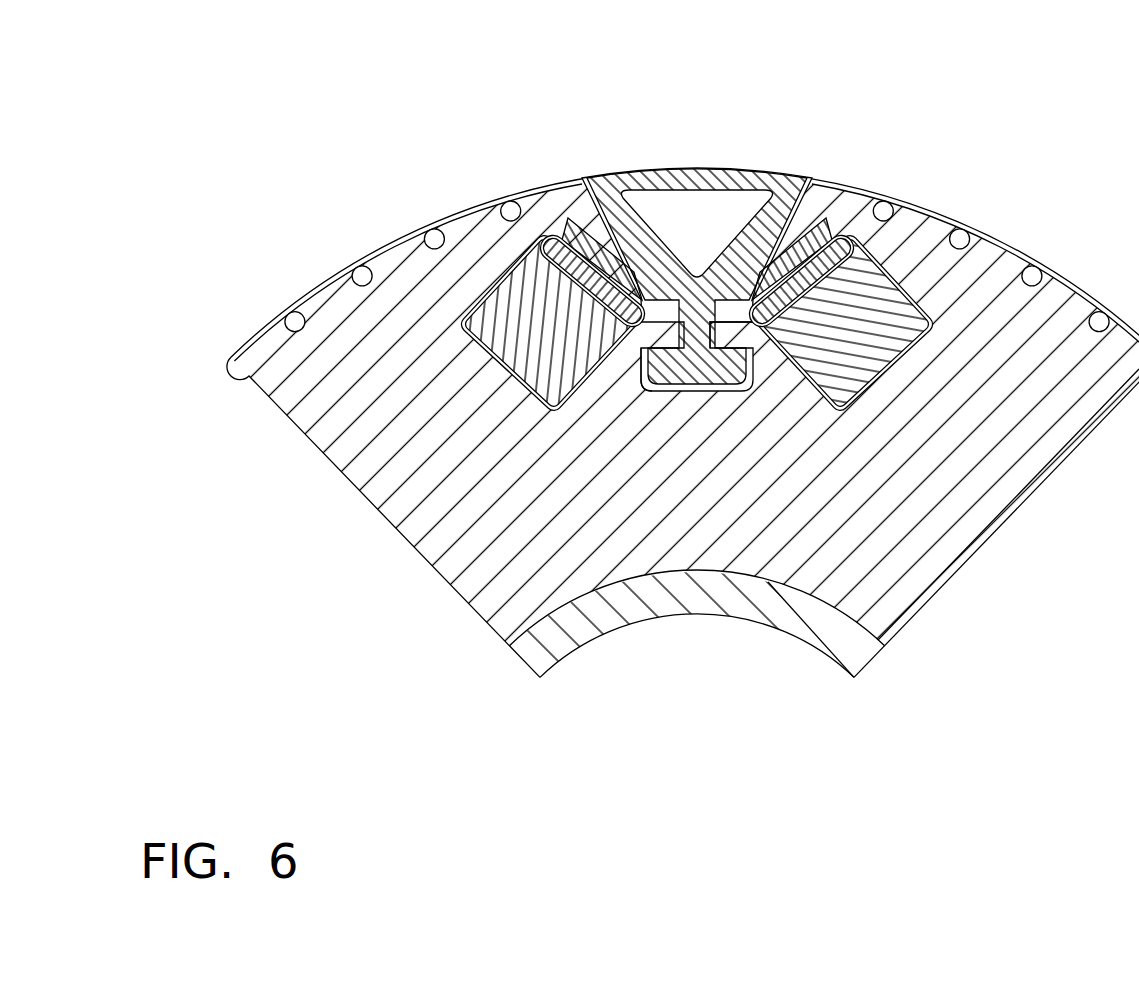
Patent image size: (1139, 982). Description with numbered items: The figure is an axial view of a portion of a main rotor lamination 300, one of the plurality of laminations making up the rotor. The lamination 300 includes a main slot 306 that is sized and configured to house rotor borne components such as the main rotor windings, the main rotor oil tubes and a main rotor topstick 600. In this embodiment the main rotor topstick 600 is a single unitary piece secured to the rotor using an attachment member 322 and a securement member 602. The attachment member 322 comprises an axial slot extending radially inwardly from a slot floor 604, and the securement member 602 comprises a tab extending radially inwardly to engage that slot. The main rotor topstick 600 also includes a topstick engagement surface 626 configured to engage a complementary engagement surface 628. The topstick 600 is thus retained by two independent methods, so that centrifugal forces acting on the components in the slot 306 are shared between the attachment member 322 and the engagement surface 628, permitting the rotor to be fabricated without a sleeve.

The main rotor lamination 300 is at (866, 80).
The main slot 306 is at (772, 158).
The attachment member 322 is at (691, 385).
The main rotor topstick 600 is at (645, 176).
The securement member 602 is at (654, 368).
The slot floor 604 is at (731, 320).
The topstick engagement surface 626 is at (826, 206).
The complementary engagement surface 628 is at (848, 212).